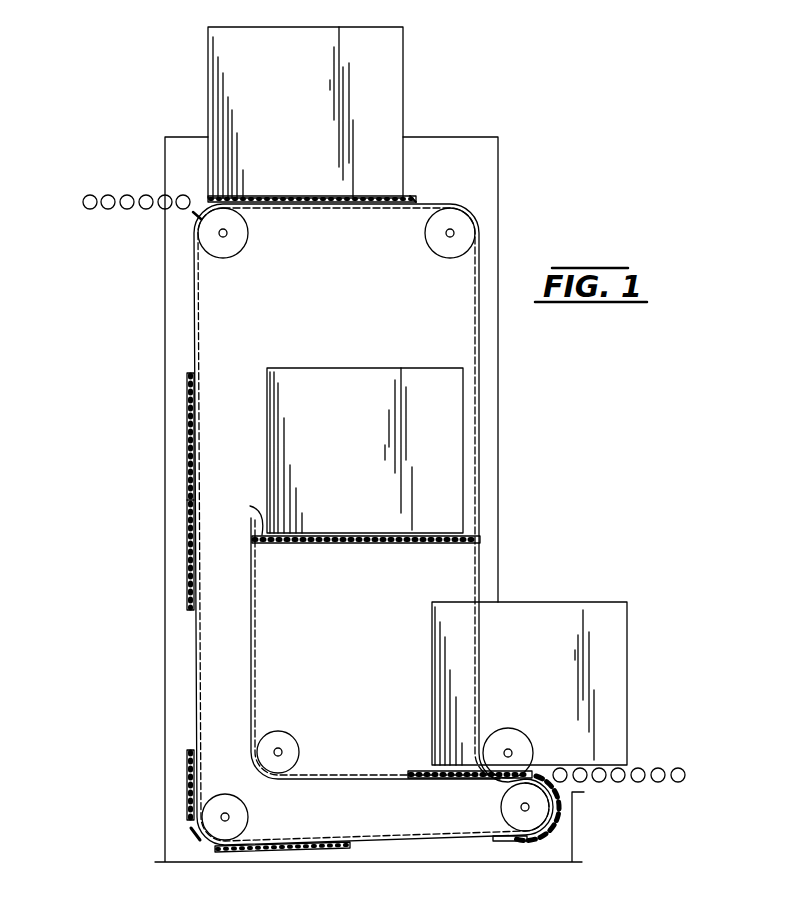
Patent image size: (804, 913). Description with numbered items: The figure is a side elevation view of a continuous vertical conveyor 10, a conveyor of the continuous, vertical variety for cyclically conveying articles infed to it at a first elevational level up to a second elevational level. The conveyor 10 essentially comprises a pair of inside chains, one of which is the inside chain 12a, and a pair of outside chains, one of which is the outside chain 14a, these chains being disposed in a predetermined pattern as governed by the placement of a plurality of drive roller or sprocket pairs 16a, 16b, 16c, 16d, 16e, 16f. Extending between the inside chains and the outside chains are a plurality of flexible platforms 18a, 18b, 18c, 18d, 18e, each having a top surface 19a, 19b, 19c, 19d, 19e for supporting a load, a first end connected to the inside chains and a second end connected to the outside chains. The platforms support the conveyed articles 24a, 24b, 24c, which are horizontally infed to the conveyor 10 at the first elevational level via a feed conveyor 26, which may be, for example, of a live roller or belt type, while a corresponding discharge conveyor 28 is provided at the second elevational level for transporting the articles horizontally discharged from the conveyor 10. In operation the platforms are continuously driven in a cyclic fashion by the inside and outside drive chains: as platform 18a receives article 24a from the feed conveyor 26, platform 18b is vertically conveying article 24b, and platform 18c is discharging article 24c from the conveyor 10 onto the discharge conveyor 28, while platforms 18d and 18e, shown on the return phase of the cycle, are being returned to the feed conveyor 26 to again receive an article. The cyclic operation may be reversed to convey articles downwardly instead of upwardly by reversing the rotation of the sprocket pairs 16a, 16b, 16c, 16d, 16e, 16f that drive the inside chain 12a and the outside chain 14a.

The continuous vertical conveyor 10 is at (630, 145).
The inside chain 12a is at (258, 639).
The outside chain 14a is at (481, 572).
The drive roller or sprocket pair 16a is at (522, 818).
The drive roller or sprocket pair 16b is at (511, 745).
The drive roller or sprocket pair 16c is at (290, 745).
The drive roller or sprocket pair 16d is at (240, 815).
The drive roller or sprocket pair 16e is at (466, 232).
The drive roller or sprocket pair 16f is at (208, 238).
The flexible platform 18a is at (552, 815).
The flexible platform 18b is at (343, 544).
The flexible platform 18c is at (420, 200).
The flexible platform 18d is at (187, 447).
The flexible platform 18e is at (236, 848).
The top surface 19a is at (424, 770).
The top surface 19b is at (262, 533).
The top surface 19c is at (413, 197).
The top surface 19d is at (190, 508).
The top surface 19e is at (190, 826).
The conveyed article 24a is at (604, 640).
The conveyed article 24b is at (445, 435).
The conveyed article 24c is at (387, 70).
The feed conveyor 26 is at (658, 768).
The discharge conveyor 28 is at (108, 194).